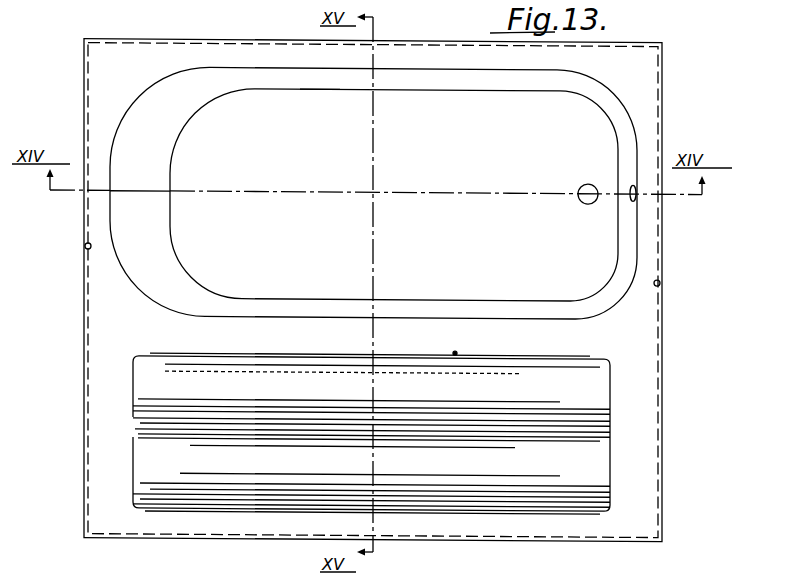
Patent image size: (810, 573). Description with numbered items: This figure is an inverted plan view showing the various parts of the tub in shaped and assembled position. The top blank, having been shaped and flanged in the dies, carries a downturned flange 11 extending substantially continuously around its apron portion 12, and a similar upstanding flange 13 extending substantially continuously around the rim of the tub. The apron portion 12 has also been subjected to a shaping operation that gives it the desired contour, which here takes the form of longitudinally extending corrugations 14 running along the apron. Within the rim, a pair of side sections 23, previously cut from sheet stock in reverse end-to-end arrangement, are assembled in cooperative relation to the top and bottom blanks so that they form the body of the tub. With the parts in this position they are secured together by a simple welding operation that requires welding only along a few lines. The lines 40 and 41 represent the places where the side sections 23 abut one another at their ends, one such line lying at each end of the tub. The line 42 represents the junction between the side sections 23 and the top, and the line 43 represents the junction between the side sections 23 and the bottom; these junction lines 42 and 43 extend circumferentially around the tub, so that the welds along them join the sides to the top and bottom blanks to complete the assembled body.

The downturned flange 11 is at (84, 452).
The apron portion 12 is at (625, 419).
The upstanding flange 13 is at (433, 33).
The longitudinally extending corrugations 14 is at (446, 470).
The side sections 23 is at (256, 84).
The welding line 40 is at (156, 182).
The welding line 41 is at (632, 201).
The junction line between sides and top 42 is at (213, 65).
The junction line between sides and bottom 43 is at (304, 88).